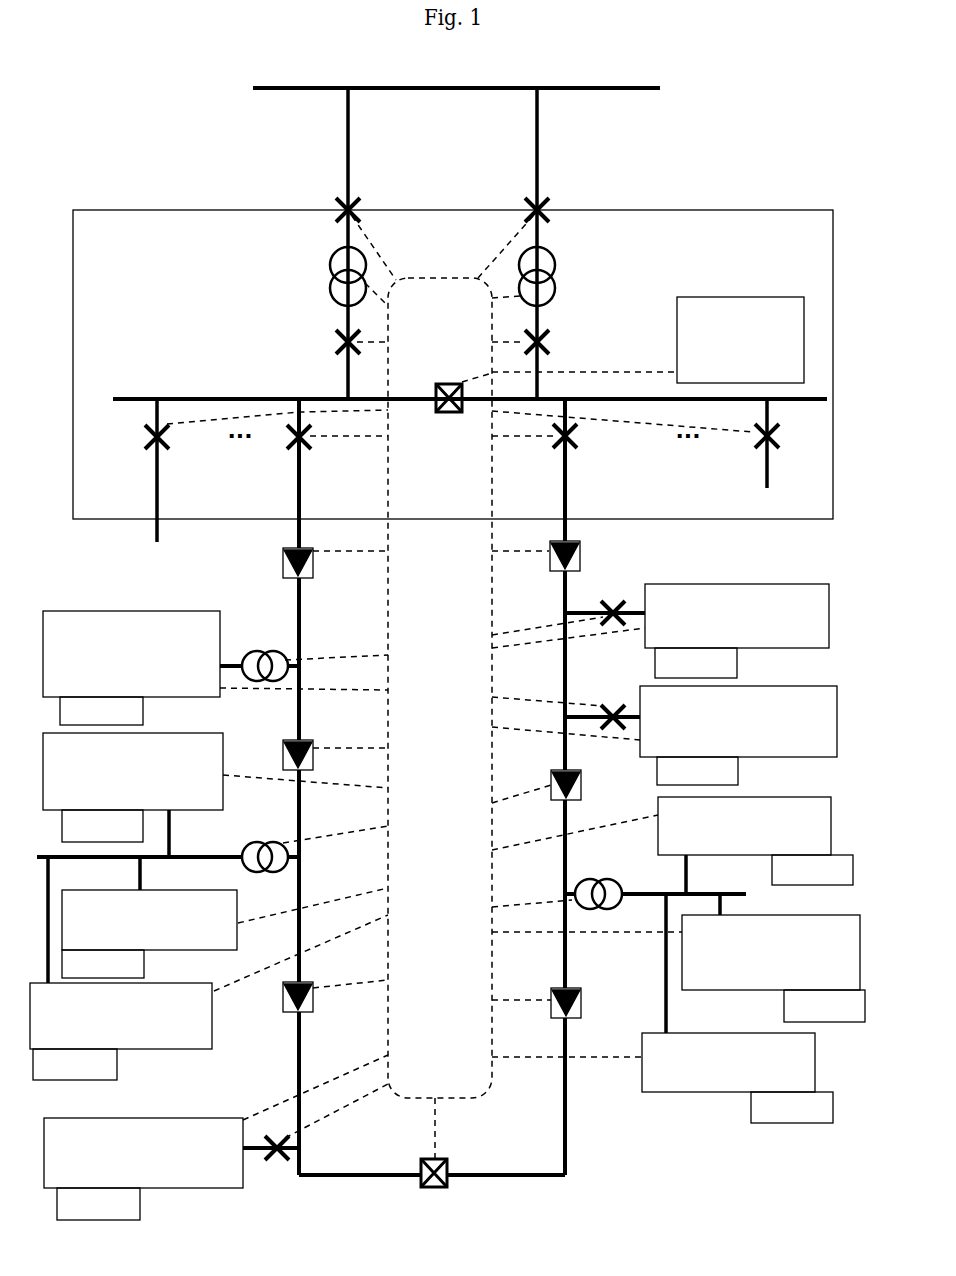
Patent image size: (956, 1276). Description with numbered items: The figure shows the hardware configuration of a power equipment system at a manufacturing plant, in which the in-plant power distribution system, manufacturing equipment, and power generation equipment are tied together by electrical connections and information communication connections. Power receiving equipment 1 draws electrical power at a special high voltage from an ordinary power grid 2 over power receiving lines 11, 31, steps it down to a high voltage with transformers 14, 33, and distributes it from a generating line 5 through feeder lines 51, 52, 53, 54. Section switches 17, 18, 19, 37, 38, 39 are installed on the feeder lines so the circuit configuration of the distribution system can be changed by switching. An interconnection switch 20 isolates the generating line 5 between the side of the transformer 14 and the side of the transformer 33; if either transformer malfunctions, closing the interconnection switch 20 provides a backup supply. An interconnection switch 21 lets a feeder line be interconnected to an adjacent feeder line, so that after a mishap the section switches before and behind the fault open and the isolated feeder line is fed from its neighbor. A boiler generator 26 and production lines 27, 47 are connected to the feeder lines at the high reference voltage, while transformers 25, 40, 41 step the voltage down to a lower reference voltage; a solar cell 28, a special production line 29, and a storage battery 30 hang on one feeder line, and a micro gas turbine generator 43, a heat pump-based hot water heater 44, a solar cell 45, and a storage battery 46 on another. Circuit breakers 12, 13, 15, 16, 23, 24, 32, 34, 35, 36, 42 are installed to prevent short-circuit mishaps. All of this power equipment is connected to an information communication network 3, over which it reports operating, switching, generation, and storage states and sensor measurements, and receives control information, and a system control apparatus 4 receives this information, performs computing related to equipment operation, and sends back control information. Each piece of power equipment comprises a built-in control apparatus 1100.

The power receiving equipment 1 is at (740, 210).
The ordinary power grid 2 is at (517, 84).
The information communication network 3 is at (425, 278).
The system control apparatus 4 is at (700, 297).
The generating line 5 is at (210, 398).
The power receiving line 11 is at (541, 152).
The circuit breaker 12 is at (548, 210).
The circuit breaker 13 is at (552, 338).
The transformer 14 is at (556, 270).
The circuit breaker 15 is at (578, 444).
The circuit breaker 16 is at (778, 446).
The section switch 17 is at (548, 570).
The section switch 18 is at (555, 788).
The section switch 19 is at (556, 993).
The interconnection switch 20 is at (447, 382).
The interconnection switch 21 is at (450, 1168).
The circuit breaker 23 is at (613, 606).
The circuit breaker 24 is at (613, 710).
The transformer 25 is at (599, 881).
The boiler generator 26 is at (728, 584).
The production line 27 is at (752, 686).
The solar cell 28 is at (752, 797).
The special production line 29 is at (770, 915).
The storage battery 30 is at (688, 1033).
The power receiving line 31 is at (352, 152).
The circuit breaker 32 is at (336, 208).
The transformer 33 is at (330, 274).
The circuit breaker 34 is at (336, 340).
The circuit breaker 35 is at (312, 446).
The circuit breaker 36 is at (172, 446).
The section switch 37 is at (316, 572).
The section switch 38 is at (305, 754).
The section switch 39 is at (316, 1004).
The transformer 40 is at (254, 651).
The transformer 41 is at (270, 843).
The circuit breaker 42 is at (274, 1160).
The micro gas turbine generator 43 is at (148, 610).
The heat pump-based hot water heater 44 is at (163, 733).
The solar cell 45 is at (168, 891).
The storage battery 46 is at (148, 983).
The production line 47 is at (135, 1118).
The feeder line 51 is at (568, 516).
The feeder line 52 is at (760, 465).
The feeder line 53 is at (294, 468).
The feeder line 54 is at (150, 466).
The built-in control apparatus 1100 is at (449, 934).